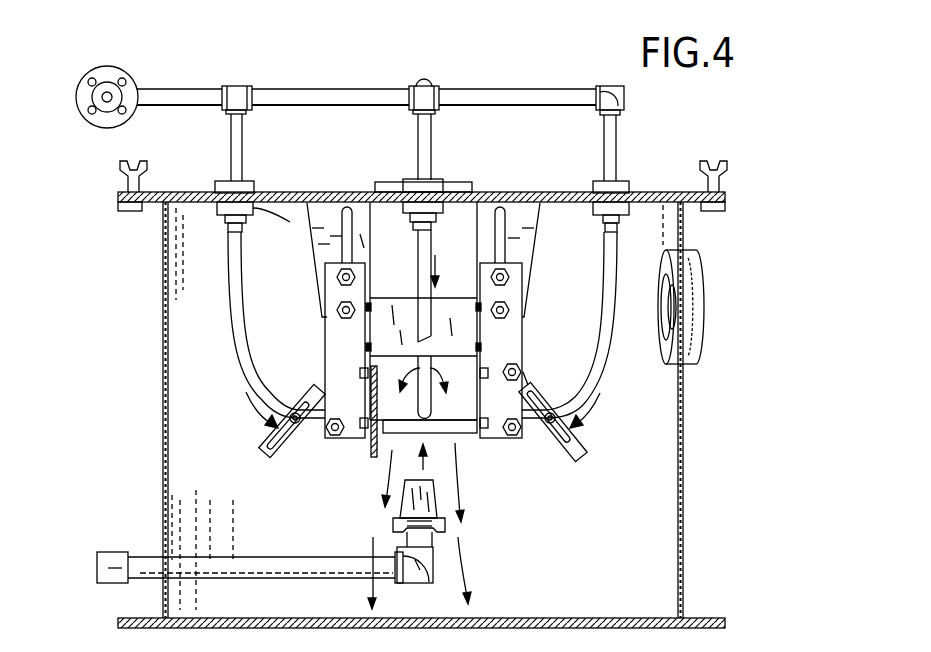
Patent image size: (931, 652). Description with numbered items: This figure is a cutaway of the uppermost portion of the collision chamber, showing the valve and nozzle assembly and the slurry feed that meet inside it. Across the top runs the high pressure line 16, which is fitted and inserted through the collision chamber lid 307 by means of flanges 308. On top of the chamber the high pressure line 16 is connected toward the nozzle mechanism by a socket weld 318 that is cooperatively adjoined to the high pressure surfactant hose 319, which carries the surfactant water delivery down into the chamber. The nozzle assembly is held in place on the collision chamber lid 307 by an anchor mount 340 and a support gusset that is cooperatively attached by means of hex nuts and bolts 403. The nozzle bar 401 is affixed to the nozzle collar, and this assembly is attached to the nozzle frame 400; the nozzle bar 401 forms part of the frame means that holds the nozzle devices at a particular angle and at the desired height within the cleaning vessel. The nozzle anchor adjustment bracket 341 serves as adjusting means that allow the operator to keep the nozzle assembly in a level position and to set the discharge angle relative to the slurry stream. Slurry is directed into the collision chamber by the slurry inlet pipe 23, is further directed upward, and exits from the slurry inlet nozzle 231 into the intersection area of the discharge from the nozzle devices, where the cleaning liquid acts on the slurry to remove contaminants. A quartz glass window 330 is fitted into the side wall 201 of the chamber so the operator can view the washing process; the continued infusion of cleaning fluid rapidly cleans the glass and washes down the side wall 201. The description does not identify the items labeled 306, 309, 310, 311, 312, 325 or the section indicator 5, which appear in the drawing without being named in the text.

The high pressure line 16 is at (118, 66).
The socket weld 318 is at (235, 97).
The high pressure surfactant hose 319 is at (338, 97).
The anchor mount 340 is at (323, 213).
The flanges 308 is at (216, 203).
The reducer fitting 310 is at (222, 212).
The hose clamp 311 is at (268, 228).
The hopper wall 312 is at (320, 215).
The collision chamber lid 307 is at (500, 218).
The lifting lug 306 is at (125, 175).
The flexible hose 309 is at (230, 262).
The side wall 201 is at (163, 297).
The nozzle anchor adjustment bracket 341 is at (368, 452).
The hex nuts and bolts 403 is at (500, 300).
The nozzle frame 400 is at (510, 343).
The quartz glass window 330 is at (672, 315).
The slurry inlet nozzle 231 is at (425, 468).
The nozzle bar 401 is at (395, 445).
The slurry inlet pipe 23 is at (222, 570).
The elbow nozzle 325 is at (412, 552).
The section line for FIG. 5 is at (208, 406).